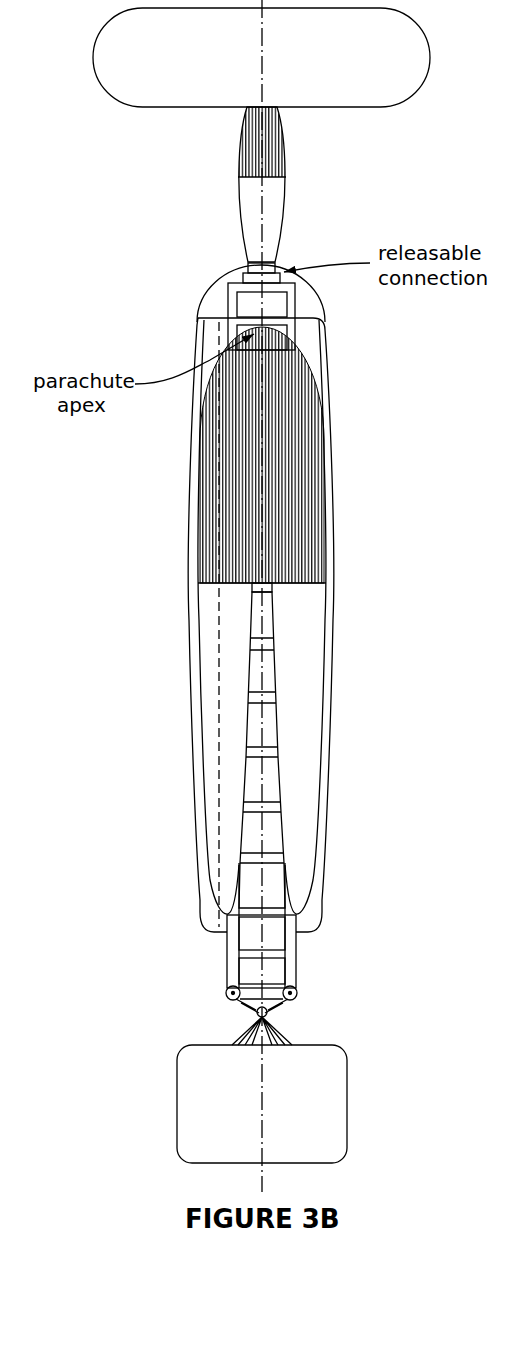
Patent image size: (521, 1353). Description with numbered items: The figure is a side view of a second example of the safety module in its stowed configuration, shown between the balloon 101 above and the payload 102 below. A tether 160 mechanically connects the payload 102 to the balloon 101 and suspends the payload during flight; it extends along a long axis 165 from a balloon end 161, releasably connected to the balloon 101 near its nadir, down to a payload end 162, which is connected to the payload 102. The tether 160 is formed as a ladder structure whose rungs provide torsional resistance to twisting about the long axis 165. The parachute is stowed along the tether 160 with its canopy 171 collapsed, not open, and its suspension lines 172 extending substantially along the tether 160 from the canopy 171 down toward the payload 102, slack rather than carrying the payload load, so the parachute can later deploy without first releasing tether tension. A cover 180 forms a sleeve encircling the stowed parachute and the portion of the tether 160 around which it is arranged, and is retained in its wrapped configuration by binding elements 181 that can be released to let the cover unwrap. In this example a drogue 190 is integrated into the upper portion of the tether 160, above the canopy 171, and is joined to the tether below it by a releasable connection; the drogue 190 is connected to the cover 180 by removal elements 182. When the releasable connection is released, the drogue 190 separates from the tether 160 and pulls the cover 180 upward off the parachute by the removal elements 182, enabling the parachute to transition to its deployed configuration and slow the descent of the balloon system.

The balloon 101 is at (345, 65).
The payload 102 is at (323, 1103).
The tether 160 is at (224, 953).
The balloon end 161 is at (277, 108).
The payload end 162 is at (290, 1015).
The long axis 165 is at (298, 1177).
The canopy 171 is at (292, 418).
The suspension lines 172 is at (216, 602).
The cover 180 is at (305, 350).
The binding elements 181 is at (214, 656).
The removal element 182 is at (228, 287).
The drogue 190 is at (330, 196).